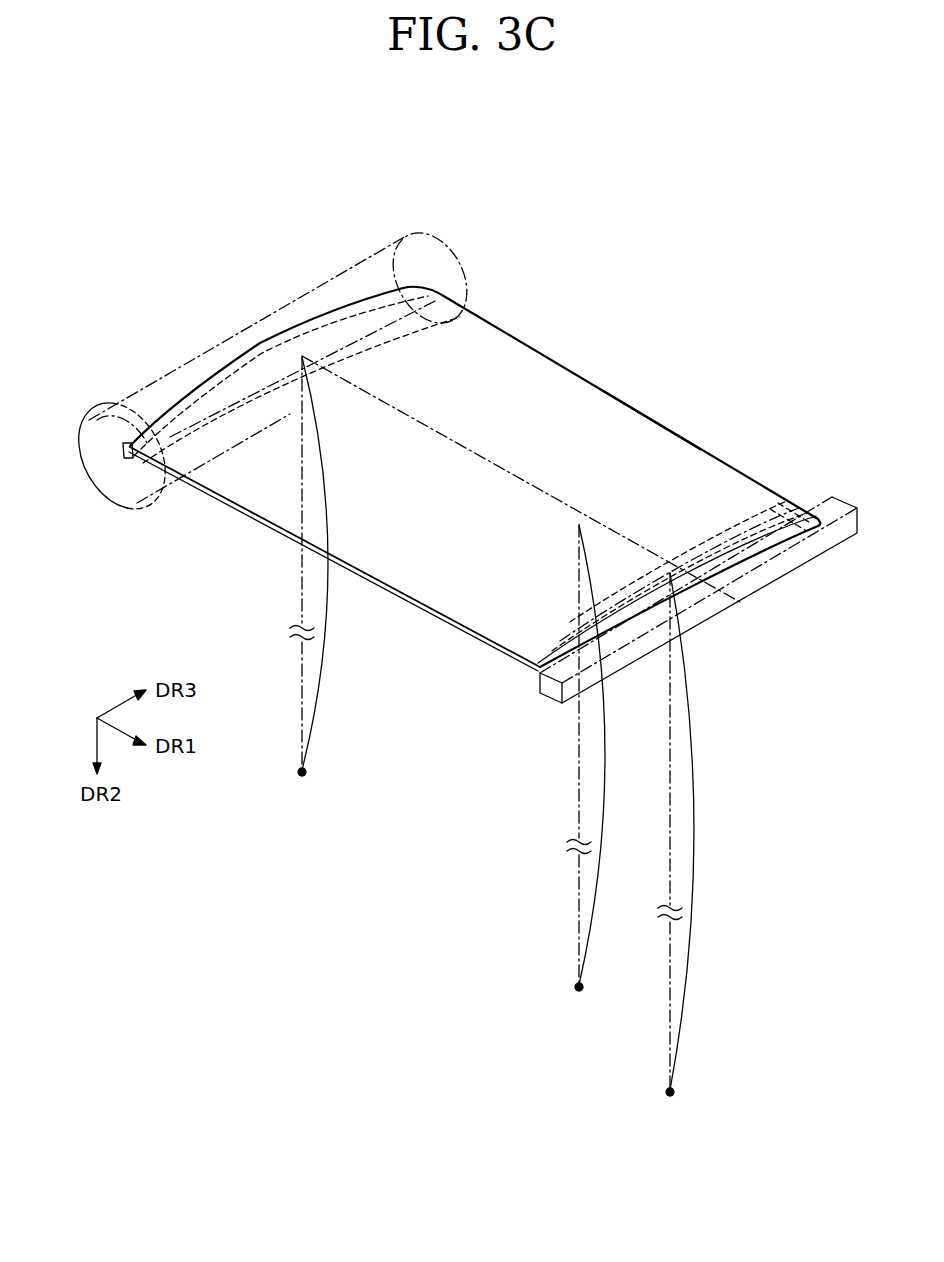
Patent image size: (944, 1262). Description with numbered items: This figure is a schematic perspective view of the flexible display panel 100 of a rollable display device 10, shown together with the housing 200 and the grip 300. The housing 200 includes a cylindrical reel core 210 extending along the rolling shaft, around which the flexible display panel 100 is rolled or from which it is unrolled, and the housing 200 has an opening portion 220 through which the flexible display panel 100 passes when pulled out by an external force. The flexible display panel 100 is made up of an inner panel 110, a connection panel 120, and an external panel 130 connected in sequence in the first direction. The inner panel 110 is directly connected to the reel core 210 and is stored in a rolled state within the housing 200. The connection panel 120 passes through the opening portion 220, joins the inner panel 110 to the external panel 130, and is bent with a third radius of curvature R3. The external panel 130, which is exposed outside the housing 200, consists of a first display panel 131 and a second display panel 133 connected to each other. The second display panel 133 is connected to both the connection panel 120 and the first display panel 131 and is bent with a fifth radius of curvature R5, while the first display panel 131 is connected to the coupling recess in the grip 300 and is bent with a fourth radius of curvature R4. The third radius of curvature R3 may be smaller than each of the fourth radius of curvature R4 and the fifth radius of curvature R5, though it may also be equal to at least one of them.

The rollable display device 10 is at (276, 203).
The flexible display panel 100 is at (478, 176).
The inner panel 110 is at (404, 287).
The connection panel 120 is at (443, 312).
The external panel 130 is at (690, 359).
The first display panel 131 is at (792, 514).
The second display panel 133 is at (668, 440).
The housing 200 is at (384, 248).
The reel core 210 is at (107, 468).
The opening portion 220 is at (254, 379).
The grip 300 is at (814, 560).
The third radius of curvature R3 is at (326, 566).
The fourth radius of curvature R4 is at (695, 834).
The fifth radius of curvature R5 is at (603, 758).